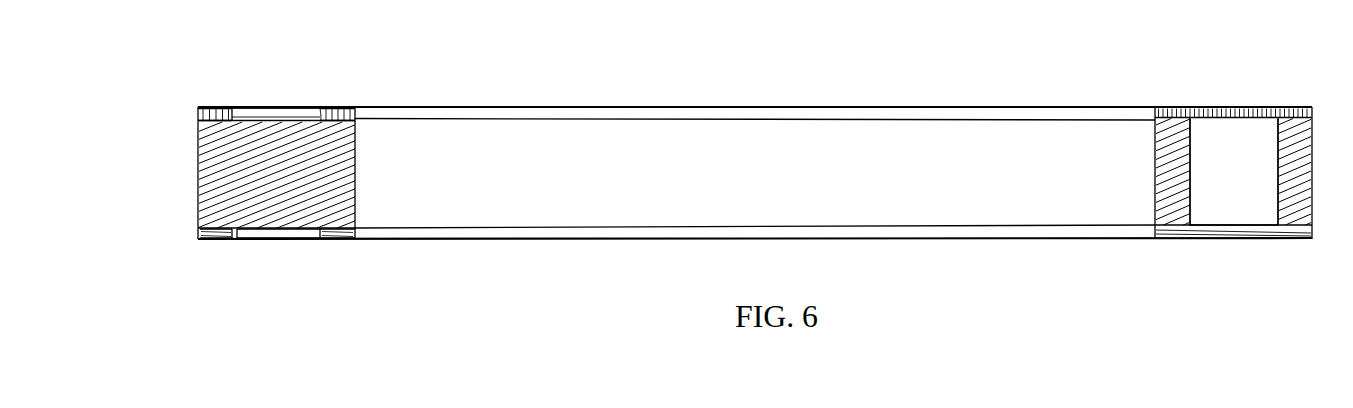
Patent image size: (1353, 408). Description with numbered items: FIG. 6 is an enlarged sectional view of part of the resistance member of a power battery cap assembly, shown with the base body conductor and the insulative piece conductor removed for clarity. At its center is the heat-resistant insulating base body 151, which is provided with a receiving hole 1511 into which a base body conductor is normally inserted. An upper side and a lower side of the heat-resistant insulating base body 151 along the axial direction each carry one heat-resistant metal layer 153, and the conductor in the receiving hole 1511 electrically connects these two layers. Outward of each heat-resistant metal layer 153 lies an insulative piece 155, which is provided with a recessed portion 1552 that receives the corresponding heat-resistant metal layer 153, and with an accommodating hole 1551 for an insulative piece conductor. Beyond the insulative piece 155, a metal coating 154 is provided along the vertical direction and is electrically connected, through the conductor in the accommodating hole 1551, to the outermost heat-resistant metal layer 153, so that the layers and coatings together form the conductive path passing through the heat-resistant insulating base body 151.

The heat-resistant insulating base body 151 is at (213, 178).
The receiving hole 1511 is at (1223, 157).
The heat-resistant metal layer 153 is at (253, 118).
The metal coating 154 is at (236, 118).
The insulative piece 155 is at (205, 110).
The accommodating hole 1551 is at (277, 113).
The recessed portion 1552 is at (320, 118).